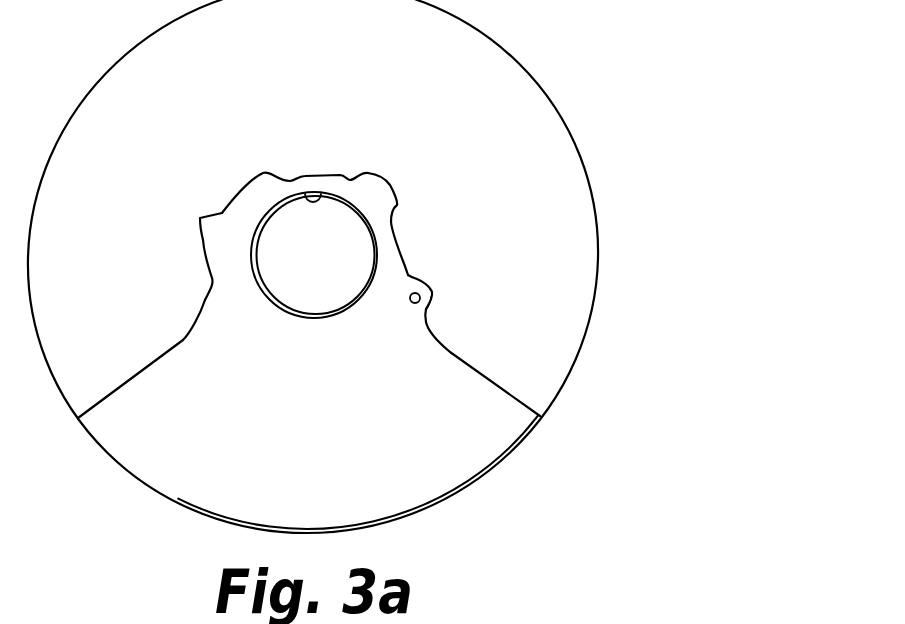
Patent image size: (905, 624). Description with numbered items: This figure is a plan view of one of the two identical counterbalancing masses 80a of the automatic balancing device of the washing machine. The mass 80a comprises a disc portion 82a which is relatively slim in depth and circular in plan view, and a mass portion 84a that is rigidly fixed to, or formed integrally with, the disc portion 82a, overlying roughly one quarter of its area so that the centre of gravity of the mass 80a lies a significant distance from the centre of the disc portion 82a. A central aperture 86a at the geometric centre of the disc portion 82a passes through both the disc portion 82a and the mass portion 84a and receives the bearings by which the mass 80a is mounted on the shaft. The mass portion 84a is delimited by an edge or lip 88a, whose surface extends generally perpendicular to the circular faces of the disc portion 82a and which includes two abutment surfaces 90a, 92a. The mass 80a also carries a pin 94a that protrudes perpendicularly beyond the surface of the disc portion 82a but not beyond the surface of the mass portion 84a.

The counterbalancing mass 80a is at (361, 266).
The disc portion 82a is at (583, 273).
The mass portion 84a is at (487, 425).
The central aperture 86a is at (325, 194).
The edge or lip 88a is at (117, 388).
The abutment surface 90a is at (420, 279).
The abutment surface 92a is at (204, 213).
The pin 94a is at (411, 301).